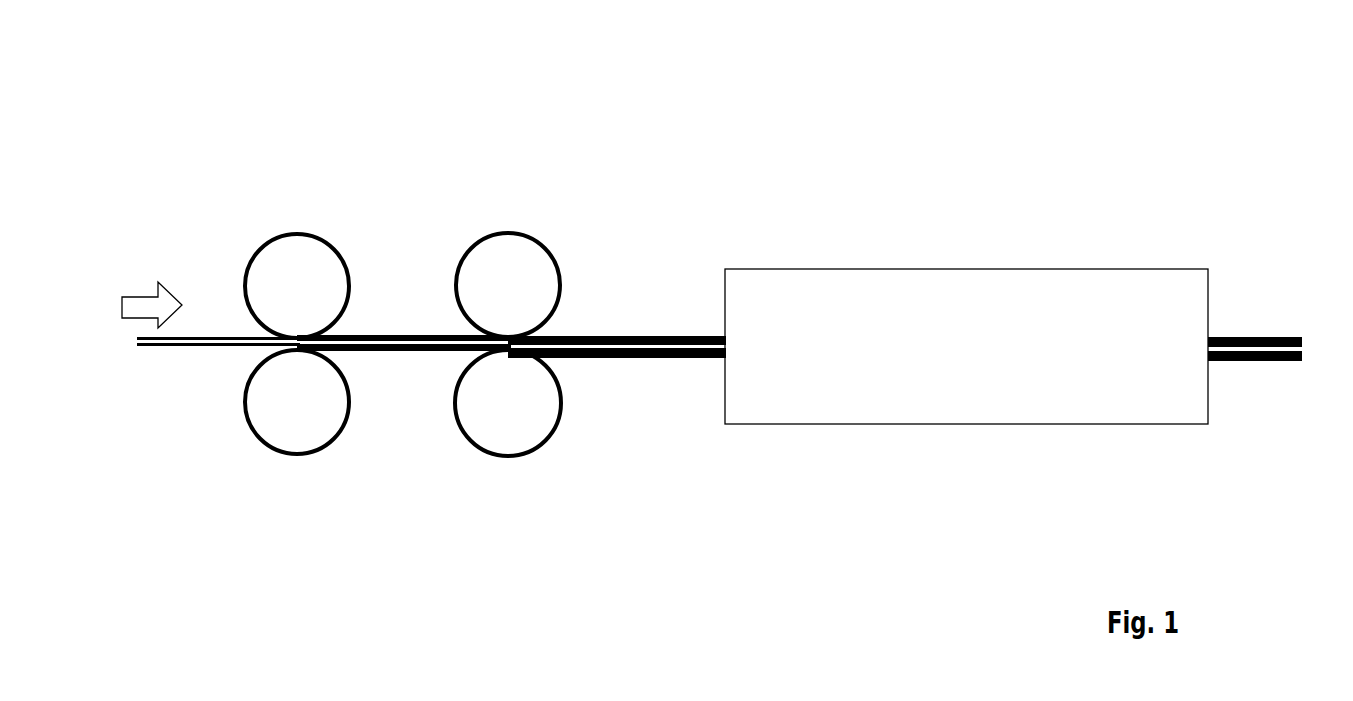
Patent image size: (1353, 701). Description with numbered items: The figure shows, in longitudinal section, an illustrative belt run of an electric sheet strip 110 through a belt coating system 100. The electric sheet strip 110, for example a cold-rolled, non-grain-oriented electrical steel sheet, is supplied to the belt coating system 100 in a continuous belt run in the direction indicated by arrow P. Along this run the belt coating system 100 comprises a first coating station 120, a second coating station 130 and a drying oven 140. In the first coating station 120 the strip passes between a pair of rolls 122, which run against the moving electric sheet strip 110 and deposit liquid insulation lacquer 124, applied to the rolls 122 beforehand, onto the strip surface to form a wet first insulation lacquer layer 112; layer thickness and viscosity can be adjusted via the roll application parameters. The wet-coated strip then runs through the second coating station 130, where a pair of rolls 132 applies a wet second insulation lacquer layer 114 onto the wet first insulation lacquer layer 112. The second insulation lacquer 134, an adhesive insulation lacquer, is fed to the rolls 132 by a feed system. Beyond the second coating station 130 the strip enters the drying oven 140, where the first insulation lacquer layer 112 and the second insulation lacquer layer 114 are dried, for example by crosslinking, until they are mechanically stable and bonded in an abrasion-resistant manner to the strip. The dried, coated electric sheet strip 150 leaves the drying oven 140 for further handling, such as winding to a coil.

The belt coating system 100 is at (872, 78).
The electric sheet strip 110 is at (185, 350).
The first insulation lacquer layer 112 is at (401, 334).
The second insulation lacquer layer 114 is at (652, 333).
The first coating station 120 is at (303, 155).
The roll 122 is at (318, 256).
The liquid insulation lacquer 124 is at (253, 243).
The second coating station 130 is at (535, 150).
The roll 132 is at (537, 246).
The second insulation lacquer 134 is at (467, 238).
The drying oven 140 is at (965, 218).
The dried, coated electric sheet strip 150 is at (1268, 300).
The arrow P is at (143, 296).